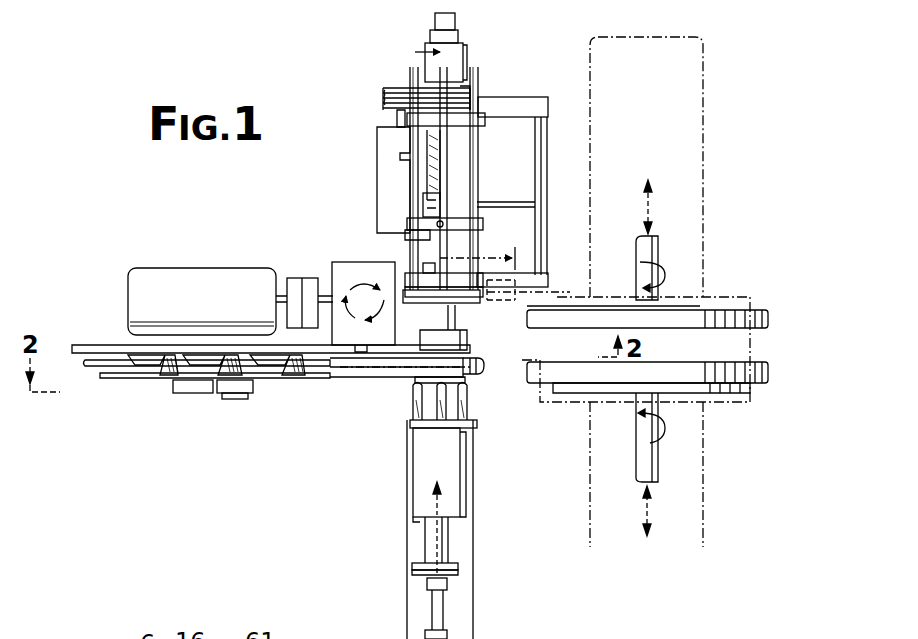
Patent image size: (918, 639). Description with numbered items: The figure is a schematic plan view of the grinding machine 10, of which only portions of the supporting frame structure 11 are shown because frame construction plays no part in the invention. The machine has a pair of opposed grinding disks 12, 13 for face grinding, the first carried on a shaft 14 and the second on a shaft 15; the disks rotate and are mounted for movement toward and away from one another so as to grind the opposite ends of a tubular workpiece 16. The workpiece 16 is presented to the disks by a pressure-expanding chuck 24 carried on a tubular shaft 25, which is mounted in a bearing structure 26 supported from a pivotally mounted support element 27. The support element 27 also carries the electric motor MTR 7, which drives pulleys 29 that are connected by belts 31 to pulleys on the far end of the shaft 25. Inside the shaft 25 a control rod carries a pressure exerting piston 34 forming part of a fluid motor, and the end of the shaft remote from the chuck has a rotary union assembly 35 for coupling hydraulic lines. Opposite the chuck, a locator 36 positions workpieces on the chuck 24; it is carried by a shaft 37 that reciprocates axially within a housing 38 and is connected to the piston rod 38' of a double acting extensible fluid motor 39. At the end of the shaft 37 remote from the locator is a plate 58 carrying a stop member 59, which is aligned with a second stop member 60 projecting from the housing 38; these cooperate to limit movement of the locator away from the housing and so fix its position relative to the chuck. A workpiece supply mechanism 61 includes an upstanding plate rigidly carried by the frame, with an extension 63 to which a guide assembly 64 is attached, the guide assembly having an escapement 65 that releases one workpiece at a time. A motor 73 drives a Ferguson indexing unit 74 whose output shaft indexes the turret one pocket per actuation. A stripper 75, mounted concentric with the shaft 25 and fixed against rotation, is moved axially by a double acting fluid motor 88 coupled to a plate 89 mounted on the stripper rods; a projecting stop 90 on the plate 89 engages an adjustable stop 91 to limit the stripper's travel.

The grinding machine 10 is at (735, 182).
The supporting frame structure 11 is at (399, 455).
The grinding disk 12 is at (768, 328).
The grinding disk 13 is at (768, 383).
The shaft 14 is at (660, 255).
The shaft 15 is at (658, 455).
The workpiece 16 is at (147, 367).
The chuck 24 is at (468, 343).
The shaft 25 is at (456, 324).
The bearing structure 26 is at (463, 150).
The pivotally mounted support element 27 is at (545, 182).
The pulleys 29 is at (405, 73).
The belts 31 is at (397, 90).
The pressure exerting piston 34 is at (455, 88).
The rotary union assembly 35 is at (470, 48).
The locator 36 is at (411, 407).
The shaft 37 is at (450, 541).
The housing 38 is at (468, 472).
The piston rod 38' is at (477, 580).
The double acting extensible fluid motor 39 is at (444, 606).
The plate 58 is at (412, 570).
The stop member 59 is at (418, 563).
The second stop member 60 is at (414, 520).
The workpiece supply mechanism 61 is at (85, 345).
The extension 63 is at (145, 633).
The guide assembly 64 is at (85, 368).
The escapement 65 is at (231, 399).
The electric motor MTR 7 is at (390, 190).
The motor 73 is at (200, 282).
The Ferguson indexing unit 74 is at (333, 268).
The stripper 75 is at (370, 330).
The double acting fluid motor 88 is at (441, 183).
The plate 89 is at (481, 224).
The projecting stop 90 is at (403, 233).
The adjustable stop 91 is at (427, 263).